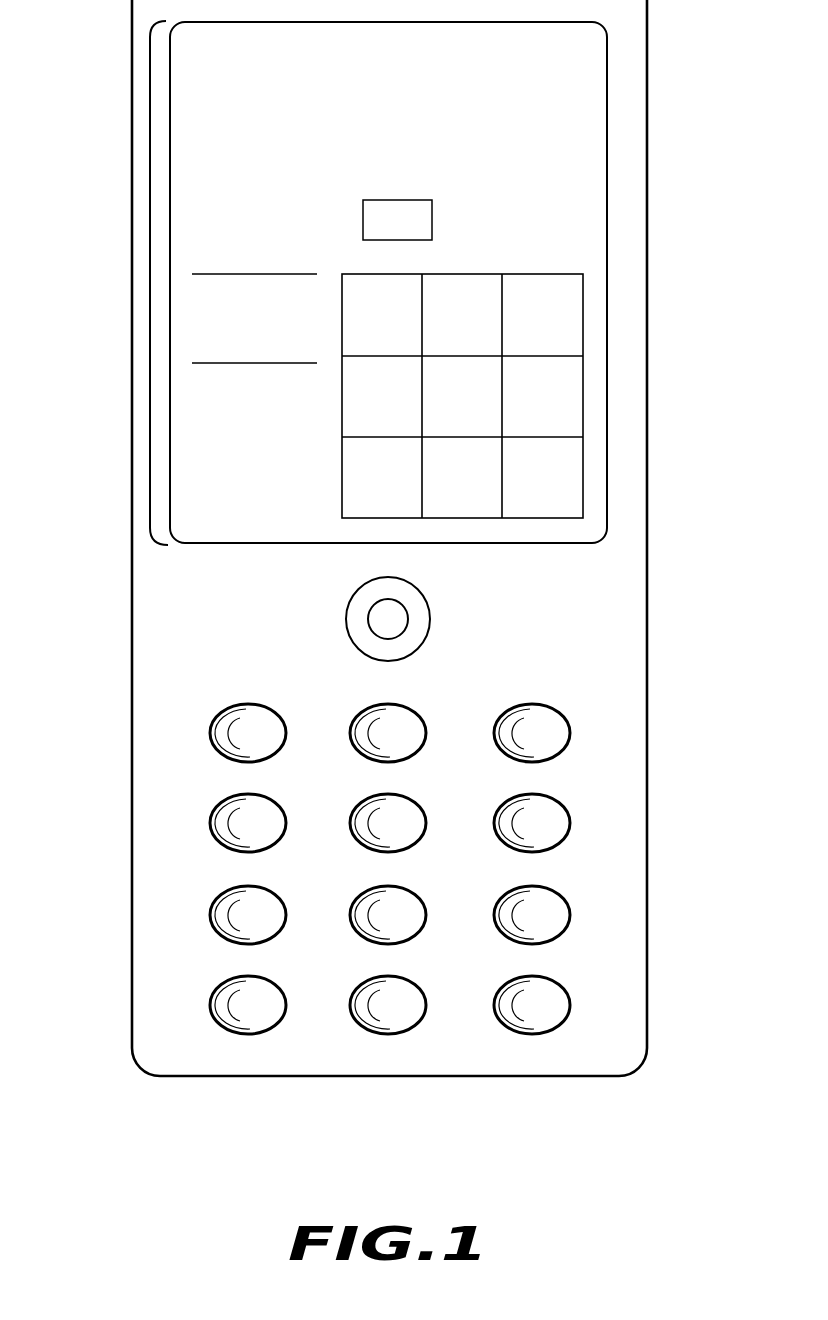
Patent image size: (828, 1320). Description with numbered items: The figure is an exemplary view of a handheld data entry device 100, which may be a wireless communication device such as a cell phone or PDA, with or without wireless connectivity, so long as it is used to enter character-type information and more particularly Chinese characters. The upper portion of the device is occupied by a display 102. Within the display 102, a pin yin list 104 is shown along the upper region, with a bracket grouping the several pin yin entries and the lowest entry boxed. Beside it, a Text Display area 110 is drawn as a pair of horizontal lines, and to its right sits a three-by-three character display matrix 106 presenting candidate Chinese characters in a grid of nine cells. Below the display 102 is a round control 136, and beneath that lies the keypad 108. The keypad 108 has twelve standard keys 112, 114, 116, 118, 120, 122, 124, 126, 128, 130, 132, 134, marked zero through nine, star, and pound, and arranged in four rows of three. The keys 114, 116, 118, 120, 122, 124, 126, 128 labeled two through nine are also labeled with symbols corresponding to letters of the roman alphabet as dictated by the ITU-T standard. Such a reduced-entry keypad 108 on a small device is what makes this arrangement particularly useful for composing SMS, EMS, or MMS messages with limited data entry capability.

The handheld data entry device 100 is at (209, 1101).
The display 102 is at (150, 286).
The pin yin list 104 is at (367, 35).
The 3×3 character display matrix 106 is at (582, 262).
The keypad 108 is at (585, 700).
The Text Display area 110 is at (255, 363).
The key 112 is at (222, 712).
The key 114 is at (362, 712).
The key 116 is at (506, 712).
The key 118 is at (222, 802).
The key 120 is at (362, 802).
The key 122 is at (506, 802).
The key 124 is at (222, 894).
The key 126 is at (362, 894).
The key 128 is at (506, 894).
The key 130 is at (222, 984).
The key 132 is at (362, 984).
The key 134 is at (506, 984).
The navigation key 136 is at (368, 620).